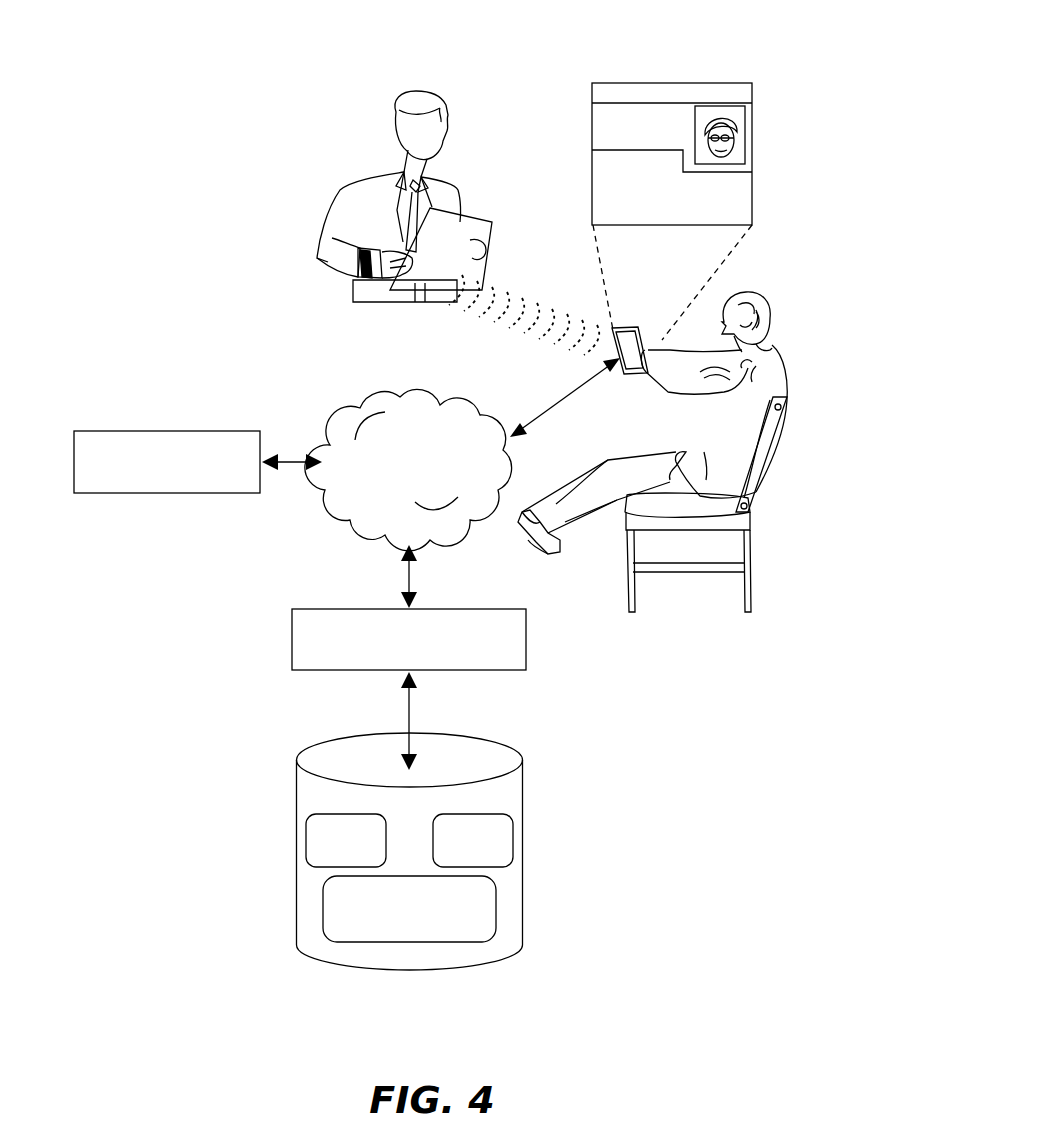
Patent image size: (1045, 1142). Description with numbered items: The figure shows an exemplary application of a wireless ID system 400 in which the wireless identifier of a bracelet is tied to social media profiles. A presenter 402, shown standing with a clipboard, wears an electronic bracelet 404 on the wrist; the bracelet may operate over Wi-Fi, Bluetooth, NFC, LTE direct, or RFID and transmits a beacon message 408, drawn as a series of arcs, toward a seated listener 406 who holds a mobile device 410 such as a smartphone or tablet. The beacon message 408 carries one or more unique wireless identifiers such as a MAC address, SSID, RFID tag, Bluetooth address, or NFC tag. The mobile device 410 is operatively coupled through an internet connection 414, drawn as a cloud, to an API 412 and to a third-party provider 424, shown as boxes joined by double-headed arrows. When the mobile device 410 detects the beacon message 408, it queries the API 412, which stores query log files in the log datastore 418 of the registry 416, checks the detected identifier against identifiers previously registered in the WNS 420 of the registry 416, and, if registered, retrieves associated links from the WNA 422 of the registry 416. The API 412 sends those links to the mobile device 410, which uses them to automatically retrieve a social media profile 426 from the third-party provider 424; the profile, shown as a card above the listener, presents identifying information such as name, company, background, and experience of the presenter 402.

The wireless ID system 400 is at (118, 105).
The presenter 402 is at (403, 98).
The electronic bracelet 404 is at (355, 245).
The listener 406 is at (758, 308).
The beacon message 408 is at (515, 308).
The mobile device 410 is at (628, 332).
The API 412 is at (307, 647).
The internet connection 414 is at (385, 400).
The registry 416 is at (330, 752).
The log datastore 418 is at (330, 928).
The WNS 420 is at (316, 828).
The WNA 422 is at (503, 832).
The third-party provider 424 is at (77, 450).
The social media profile 426 is at (590, 92).